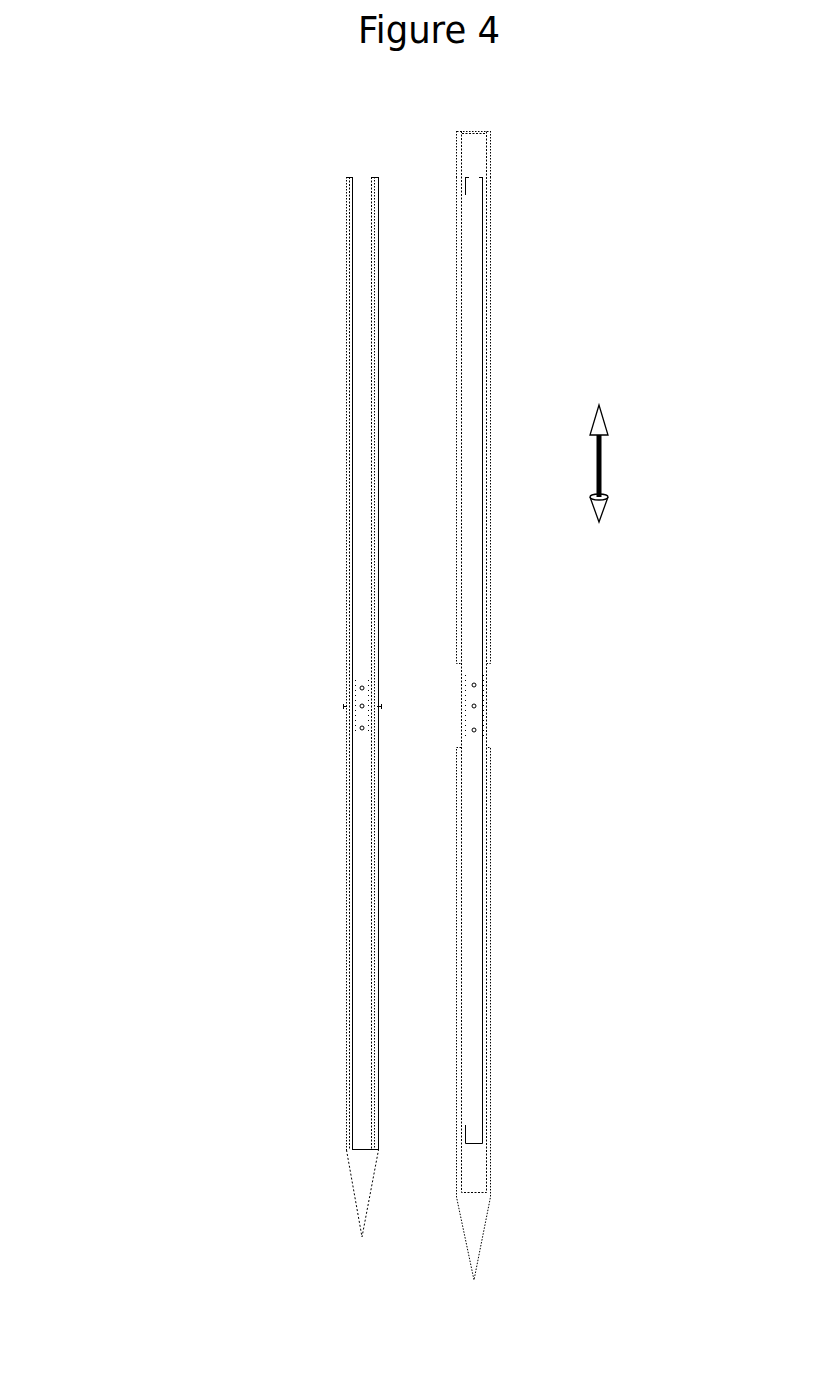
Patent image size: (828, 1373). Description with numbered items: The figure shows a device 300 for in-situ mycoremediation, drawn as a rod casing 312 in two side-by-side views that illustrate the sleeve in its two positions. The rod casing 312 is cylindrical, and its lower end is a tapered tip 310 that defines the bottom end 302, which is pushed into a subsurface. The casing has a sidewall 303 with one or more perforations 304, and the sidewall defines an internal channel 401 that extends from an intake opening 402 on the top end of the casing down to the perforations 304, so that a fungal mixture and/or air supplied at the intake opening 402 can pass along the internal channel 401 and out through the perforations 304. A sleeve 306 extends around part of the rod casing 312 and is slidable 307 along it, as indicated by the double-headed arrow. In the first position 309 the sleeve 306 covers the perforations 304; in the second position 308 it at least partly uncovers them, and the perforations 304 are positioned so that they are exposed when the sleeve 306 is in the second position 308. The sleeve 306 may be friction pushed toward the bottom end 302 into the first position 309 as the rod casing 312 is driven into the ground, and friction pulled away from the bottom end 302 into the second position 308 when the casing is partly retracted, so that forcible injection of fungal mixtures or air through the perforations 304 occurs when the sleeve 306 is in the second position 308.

The device 300 is at (170, 167).
The bottom end 302 is at (348, 1220).
The sidewall 303 is at (322, 686).
The perforations 304 is at (476, 706).
The sleeve 306 is at (495, 628).
The slidable 307 is at (612, 463).
The second position 308 is at (499, 741).
The first position 309 is at (336, 808).
The tapered tip 310 is at (372, 1164).
The rod casing 312 is at (347, 432).
The internal channel 401 is at (477, 190).
The intake opening 402 is at (486, 125).